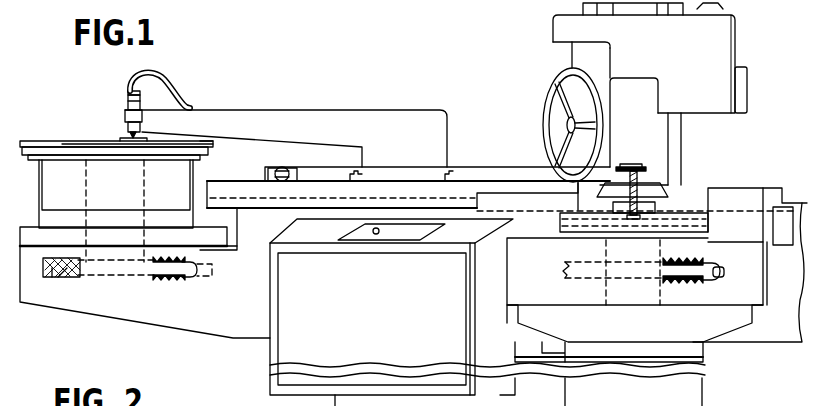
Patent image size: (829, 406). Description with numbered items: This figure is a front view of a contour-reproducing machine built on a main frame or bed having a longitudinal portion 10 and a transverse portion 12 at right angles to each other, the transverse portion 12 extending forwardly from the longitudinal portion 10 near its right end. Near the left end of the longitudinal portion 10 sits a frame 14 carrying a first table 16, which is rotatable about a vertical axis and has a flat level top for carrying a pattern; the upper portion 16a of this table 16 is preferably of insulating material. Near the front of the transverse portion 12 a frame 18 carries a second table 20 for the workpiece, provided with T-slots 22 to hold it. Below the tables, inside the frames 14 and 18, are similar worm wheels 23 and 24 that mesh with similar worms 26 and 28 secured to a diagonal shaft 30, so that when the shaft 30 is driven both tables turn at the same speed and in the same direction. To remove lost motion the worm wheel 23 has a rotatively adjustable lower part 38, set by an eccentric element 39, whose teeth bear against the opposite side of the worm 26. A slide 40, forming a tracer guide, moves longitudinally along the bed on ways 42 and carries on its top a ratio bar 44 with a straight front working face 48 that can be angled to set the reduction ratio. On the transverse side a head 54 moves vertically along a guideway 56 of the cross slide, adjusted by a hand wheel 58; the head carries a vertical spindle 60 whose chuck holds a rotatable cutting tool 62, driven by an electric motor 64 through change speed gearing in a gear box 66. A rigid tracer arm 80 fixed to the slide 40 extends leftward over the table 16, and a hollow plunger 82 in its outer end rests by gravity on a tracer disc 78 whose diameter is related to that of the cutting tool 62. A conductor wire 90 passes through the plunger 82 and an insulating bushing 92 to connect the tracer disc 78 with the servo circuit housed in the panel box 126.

The longitudinal bed portion 10 is at (240, 338).
The transverse bed portion 12 is at (700, 360).
The frame 14 is at (27, 227).
The table 16 is at (60, 141).
The upper portion of the table 16a is at (212, 143).
The frame 18 is at (547, 232).
The table 20 is at (707, 212).
The T-slots 22 is at (635, 219).
The worm wheel 23 is at (70, 278).
The worm wheel 24 is at (573, 279).
The worm 26 is at (168, 282).
The worm 28 is at (707, 260).
The diagonal shaft 30 is at (720, 277).
The rotatively adjustable lower part 38 is at (67, 278).
The eccentric element 39 is at (57, 278).
The slide 40 is at (458, 178).
The ways 42 is at (510, 178).
The ratio bar 44 is at (387, 166).
The front working face 48 is at (312, 177).
The head 54 is at (663, 130).
The vertical guideway 56 is at (650, 173).
The hand wheel 58 is at (547, 121).
The vertical spindle 60 is at (615, 167).
The cutting tool 62 is at (630, 190).
The electric motor 64 is at (740, 25).
The gear box 66 is at (715, 58).
The tracer disc 78 is at (123, 137).
The tracer arm 80 is at (382, 123).
The hollow plunger 82 is at (127, 101).
The conductor wire 90 is at (174, 94).
The insulating bushing 92 is at (130, 90).
The panel box 126 is at (278, 241).